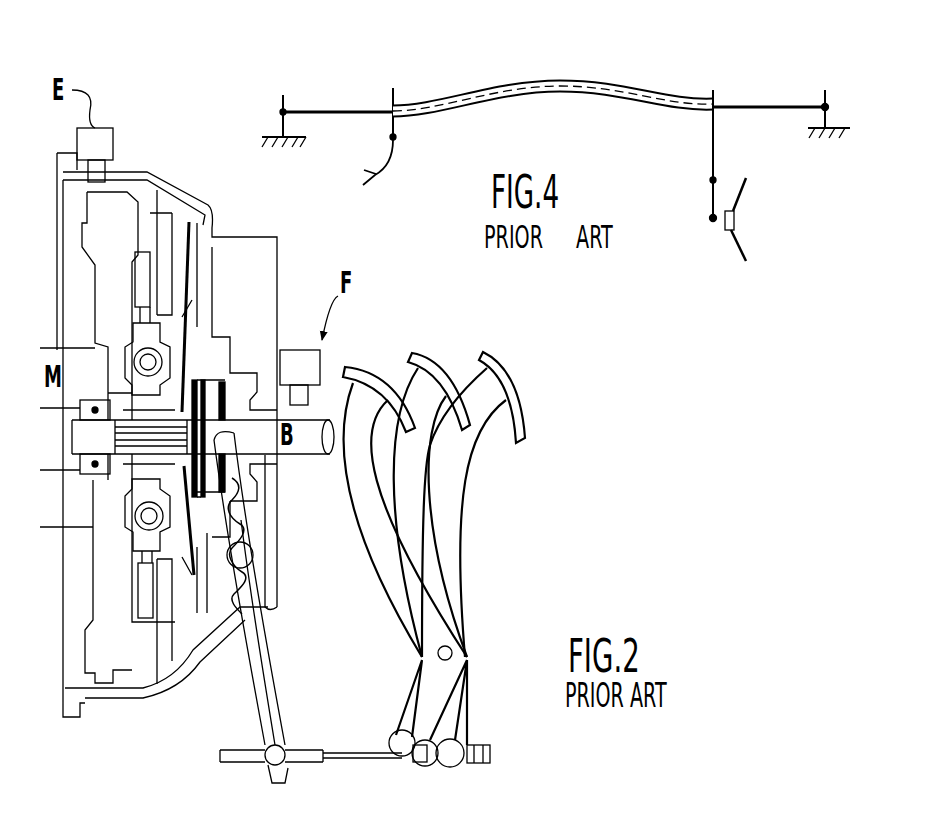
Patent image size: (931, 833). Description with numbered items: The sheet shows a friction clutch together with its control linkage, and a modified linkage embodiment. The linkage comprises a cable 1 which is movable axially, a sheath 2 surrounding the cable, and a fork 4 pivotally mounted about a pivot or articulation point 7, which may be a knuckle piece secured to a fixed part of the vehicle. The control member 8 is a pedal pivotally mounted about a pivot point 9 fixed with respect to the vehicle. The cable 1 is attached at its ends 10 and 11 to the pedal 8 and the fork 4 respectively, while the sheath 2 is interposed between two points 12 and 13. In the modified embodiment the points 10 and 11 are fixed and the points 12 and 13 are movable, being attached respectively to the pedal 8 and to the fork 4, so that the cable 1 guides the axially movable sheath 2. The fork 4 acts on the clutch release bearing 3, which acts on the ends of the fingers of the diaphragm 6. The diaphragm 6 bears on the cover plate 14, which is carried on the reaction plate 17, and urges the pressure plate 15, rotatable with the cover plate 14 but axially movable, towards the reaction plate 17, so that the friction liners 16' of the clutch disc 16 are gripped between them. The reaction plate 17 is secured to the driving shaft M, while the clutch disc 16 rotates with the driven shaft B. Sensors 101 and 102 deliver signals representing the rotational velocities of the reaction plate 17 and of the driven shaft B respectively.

In FIG. 4, the cable 1 is at (322, 108).
In FIG. 2, the cable 1 is at (358, 745).
In FIG. 4, the sheath 2 is at (498, 84).
In FIG. 4, the clutch release bearing 3 is at (727, 212).
In FIG. 2, the clutch release bearing 3 is at (215, 395).
In FIG. 4, the fork 4 is at (705, 143).
In FIG. 2, the fork 4 is at (240, 668).
In FIG. 4, the diaphragm 6 is at (734, 250).
In FIG. 2, the diaphragm 6 is at (200, 370).
In FIG. 2, the pivot or articulation point 7 is at (252, 553).
In FIG. 4, the control member 8 is at (388, 180).
In FIG. 2, the control member 8 is at (462, 566).
In FIG. 2, the pivot point 9 is at (452, 653).
In FIG. 4, the cable end 10 is at (285, 108).
In FIG. 2, the cable end 10 is at (452, 752).
In FIG. 4, the cable end 11 is at (823, 103).
In FIG. 2, the cable end 11 is at (268, 752).
In FIG. 4, the sheath application point 12 is at (395, 98).
In FIG. 4, the sheath application point 13 is at (711, 93).
In FIG. 2, the cover plate 14 is at (203, 215).
In FIG. 2, the pressure plate 15 is at (147, 180).
In FIG. 2, the friction disc clutch 16 is at (146, 608).
In FIG. 2, the friction liners 16' is at (93, 300).
In FIG. 2, the reaction plate 17 is at (105, 650).
In FIG. 2, the sensor 101 is at (113, 128).
In FIG. 2, the sensor 102 is at (325, 350).